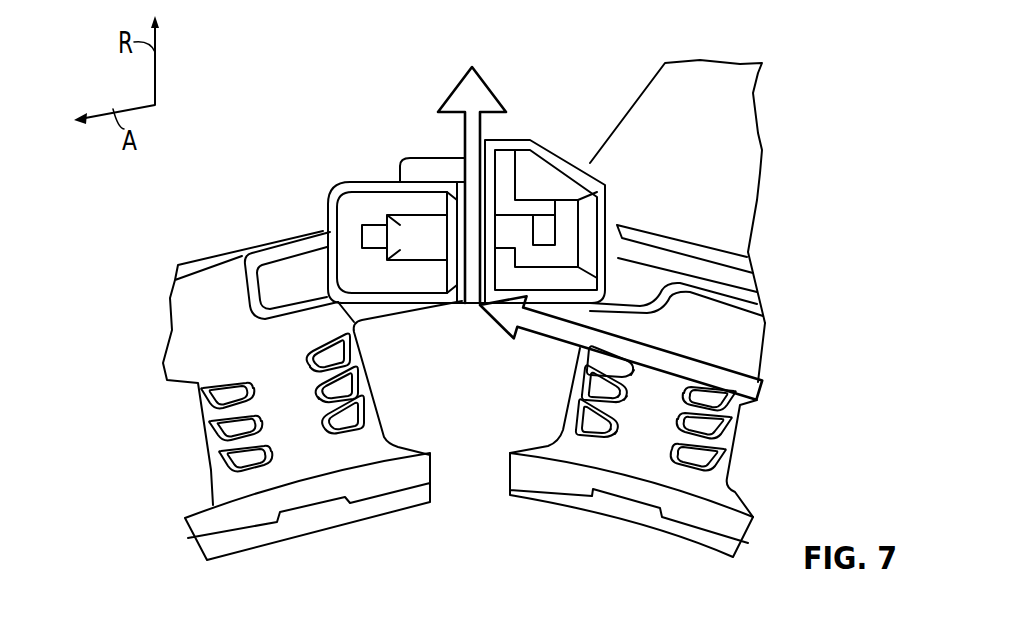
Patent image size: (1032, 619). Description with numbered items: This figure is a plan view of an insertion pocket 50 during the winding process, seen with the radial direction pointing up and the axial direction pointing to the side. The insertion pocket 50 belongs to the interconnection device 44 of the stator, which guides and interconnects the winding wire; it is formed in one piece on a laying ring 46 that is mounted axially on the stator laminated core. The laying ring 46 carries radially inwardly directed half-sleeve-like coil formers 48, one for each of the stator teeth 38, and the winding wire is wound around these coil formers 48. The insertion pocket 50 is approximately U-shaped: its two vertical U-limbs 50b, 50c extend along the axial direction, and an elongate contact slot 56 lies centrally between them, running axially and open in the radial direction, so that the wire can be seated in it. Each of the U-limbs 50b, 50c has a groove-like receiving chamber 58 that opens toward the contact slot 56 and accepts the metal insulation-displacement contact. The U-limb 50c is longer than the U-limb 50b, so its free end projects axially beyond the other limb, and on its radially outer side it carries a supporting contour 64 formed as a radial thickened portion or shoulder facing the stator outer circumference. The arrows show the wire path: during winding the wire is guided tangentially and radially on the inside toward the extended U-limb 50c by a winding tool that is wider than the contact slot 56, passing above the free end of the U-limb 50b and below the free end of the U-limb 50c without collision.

The stator teeth 38 is at (313, 516).
The interconnection device 44 is at (198, 325).
The laying ring 46 is at (637, 420).
The coil former 48 is at (215, 443).
The insertion pocket 50 is at (391, 176).
The vertical U-limb 50b is at (328, 202).
The vertical U-limb 50c is at (615, 215).
The contact slot 56 is at (456, 300).
The receiving chamber 58 is at (370, 240).
The supporting contour 64 is at (556, 152).